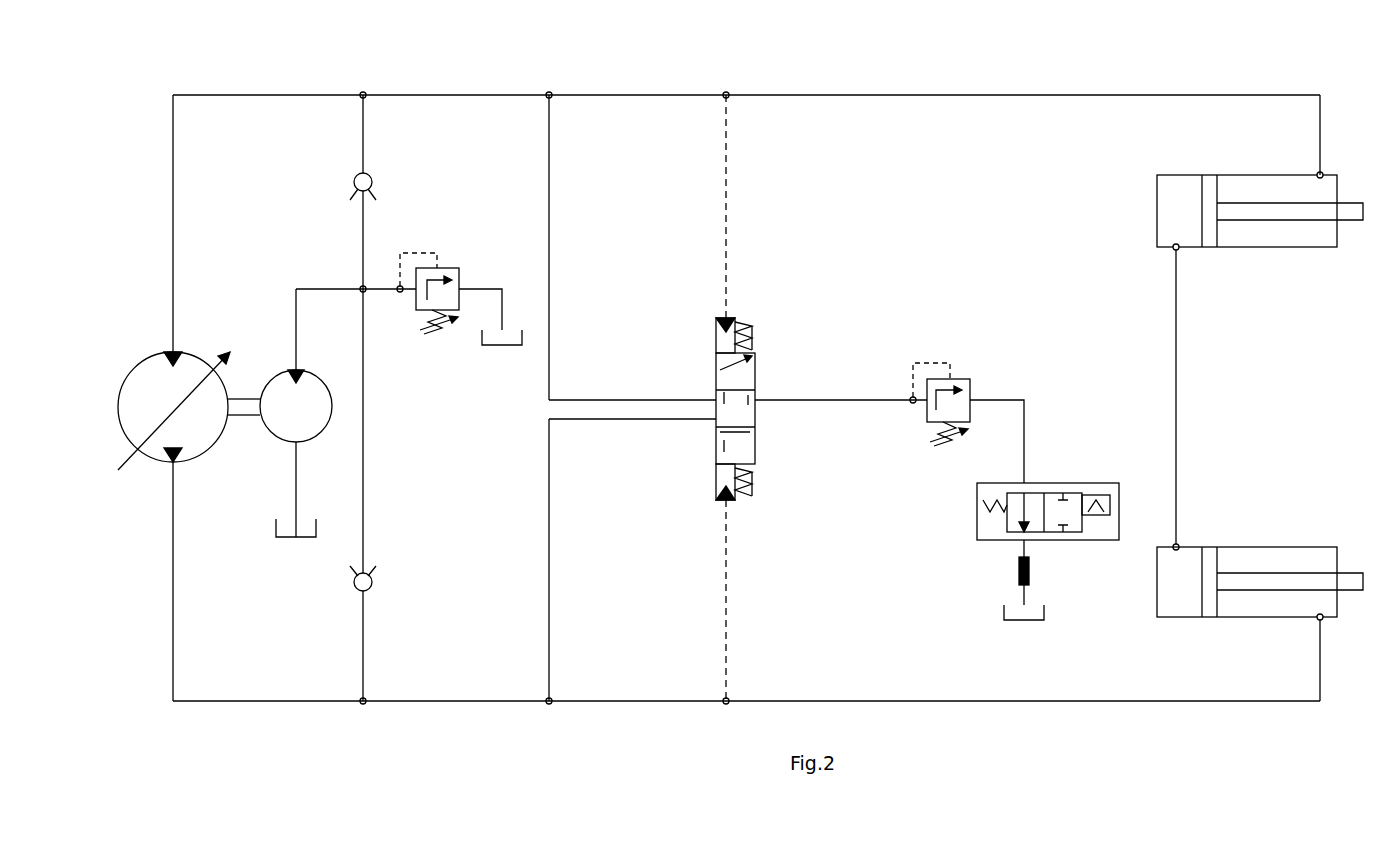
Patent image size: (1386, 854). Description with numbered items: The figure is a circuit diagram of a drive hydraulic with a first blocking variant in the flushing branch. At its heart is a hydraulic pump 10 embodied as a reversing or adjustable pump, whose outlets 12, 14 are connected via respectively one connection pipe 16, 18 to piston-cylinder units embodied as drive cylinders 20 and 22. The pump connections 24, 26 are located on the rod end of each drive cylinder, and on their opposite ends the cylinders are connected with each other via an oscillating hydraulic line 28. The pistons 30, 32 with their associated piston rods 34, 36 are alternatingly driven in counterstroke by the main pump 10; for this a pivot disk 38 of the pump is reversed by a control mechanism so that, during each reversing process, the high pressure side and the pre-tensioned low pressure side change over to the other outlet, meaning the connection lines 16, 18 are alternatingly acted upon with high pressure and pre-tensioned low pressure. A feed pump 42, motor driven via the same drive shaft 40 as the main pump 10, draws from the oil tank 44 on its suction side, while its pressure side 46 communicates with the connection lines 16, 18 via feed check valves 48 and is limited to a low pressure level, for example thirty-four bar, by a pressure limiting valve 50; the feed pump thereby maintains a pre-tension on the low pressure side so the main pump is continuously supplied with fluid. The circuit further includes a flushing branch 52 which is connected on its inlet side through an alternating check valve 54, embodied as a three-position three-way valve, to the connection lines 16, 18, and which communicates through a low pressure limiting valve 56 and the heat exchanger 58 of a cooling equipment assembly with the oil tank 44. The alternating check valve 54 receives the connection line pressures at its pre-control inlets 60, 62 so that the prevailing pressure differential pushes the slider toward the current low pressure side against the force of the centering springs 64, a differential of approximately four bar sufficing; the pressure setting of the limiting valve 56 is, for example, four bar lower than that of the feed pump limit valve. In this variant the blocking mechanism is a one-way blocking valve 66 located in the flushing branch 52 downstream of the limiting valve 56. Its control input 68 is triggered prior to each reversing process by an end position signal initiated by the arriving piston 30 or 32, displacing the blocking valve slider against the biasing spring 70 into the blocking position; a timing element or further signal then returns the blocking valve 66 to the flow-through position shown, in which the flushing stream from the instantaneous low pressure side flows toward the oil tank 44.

The hydraulic pump 10 is at (188, 365).
The outlet 12 is at (168, 352).
The outlet 14 is at (173, 462).
The connection pipe 16 is at (272, 95).
The connection pipe 18 is at (237, 701).
The drive cylinder 20 is at (1190, 175).
The drive cylinder 22 is at (1245, 547).
The pump connection 24 is at (1322, 172).
The pump connection 26 is at (1322, 620).
The oscillating hydraulic line 28 is at (1178, 378).
The piston 30 is at (1210, 240).
The piston 32 is at (1210, 547).
The piston rod 34 is at (1302, 215).
The piston rod 36 is at (1290, 580).
The pivot disk 38 is at (218, 360).
The drive shaft 40 is at (243, 420).
The feed pump 42 is at (302, 405).
The oil tank 44 is at (303, 540).
The pressure side 46 is at (292, 370).
The feed check valve 48 is at (368, 176).
The pressure limiting valve 50 is at (440, 300).
The flushing branch 52 is at (842, 358).
The alternating check valve 54 is at (762, 375).
The low pressure limiting valve 56 is at (962, 378).
The heat exchanger 58 is at (1032, 573).
The pre-control inlet 60 is at (718, 340).
The pre-control inlet 62 is at (722, 483).
The centering springs 64 is at (748, 330).
The one-way blocking valve 66 is at (1062, 493).
The control input 68 is at (1098, 493).
The biasing spring 70 is at (983, 500).